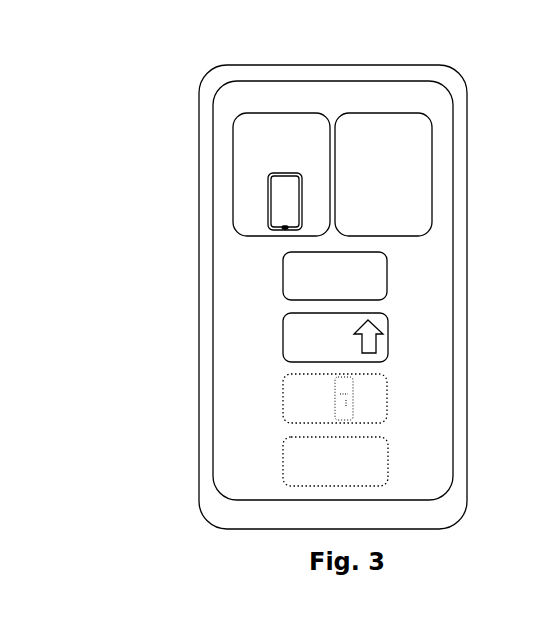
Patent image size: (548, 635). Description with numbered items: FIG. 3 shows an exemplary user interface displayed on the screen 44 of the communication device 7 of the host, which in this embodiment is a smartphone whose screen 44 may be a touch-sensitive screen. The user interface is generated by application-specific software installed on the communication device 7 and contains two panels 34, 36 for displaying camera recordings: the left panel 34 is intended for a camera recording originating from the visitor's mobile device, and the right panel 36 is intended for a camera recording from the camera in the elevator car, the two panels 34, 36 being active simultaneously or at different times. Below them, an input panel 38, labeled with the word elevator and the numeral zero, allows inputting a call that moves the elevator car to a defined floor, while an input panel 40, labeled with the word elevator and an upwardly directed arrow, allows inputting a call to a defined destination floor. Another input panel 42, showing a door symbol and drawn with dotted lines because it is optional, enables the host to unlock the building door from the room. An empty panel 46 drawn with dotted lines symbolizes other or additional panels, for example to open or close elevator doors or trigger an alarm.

The communication device 7 is at (425, 65).
The panel 34 is at (235, 145).
The panel 36 is at (432, 153).
The input panel 38 is at (388, 273).
The input panel 40 is at (388, 337).
The input panel 42 is at (388, 398).
The screen 44 is at (255, 297).
The empty panel 46 is at (388, 457).